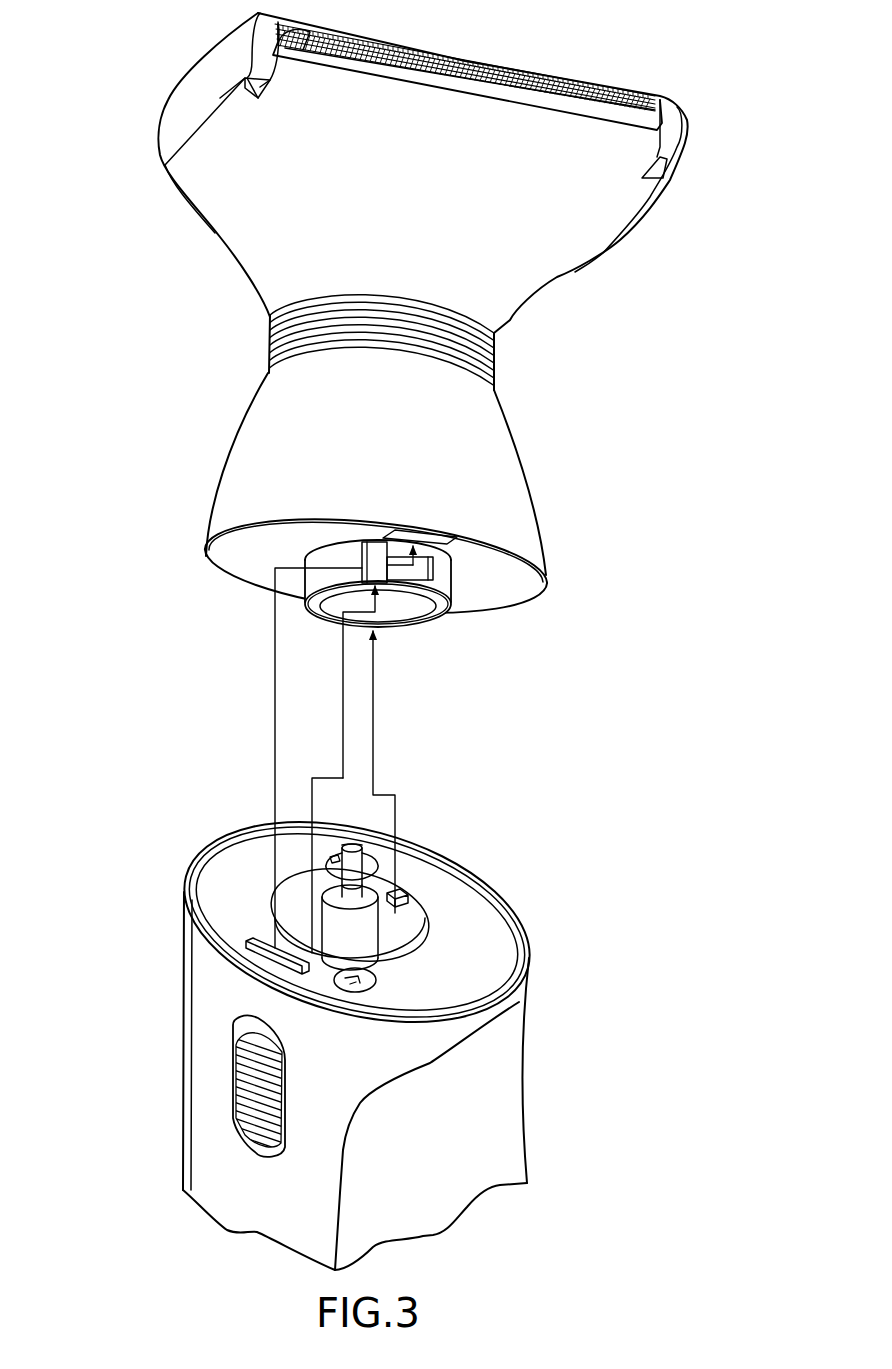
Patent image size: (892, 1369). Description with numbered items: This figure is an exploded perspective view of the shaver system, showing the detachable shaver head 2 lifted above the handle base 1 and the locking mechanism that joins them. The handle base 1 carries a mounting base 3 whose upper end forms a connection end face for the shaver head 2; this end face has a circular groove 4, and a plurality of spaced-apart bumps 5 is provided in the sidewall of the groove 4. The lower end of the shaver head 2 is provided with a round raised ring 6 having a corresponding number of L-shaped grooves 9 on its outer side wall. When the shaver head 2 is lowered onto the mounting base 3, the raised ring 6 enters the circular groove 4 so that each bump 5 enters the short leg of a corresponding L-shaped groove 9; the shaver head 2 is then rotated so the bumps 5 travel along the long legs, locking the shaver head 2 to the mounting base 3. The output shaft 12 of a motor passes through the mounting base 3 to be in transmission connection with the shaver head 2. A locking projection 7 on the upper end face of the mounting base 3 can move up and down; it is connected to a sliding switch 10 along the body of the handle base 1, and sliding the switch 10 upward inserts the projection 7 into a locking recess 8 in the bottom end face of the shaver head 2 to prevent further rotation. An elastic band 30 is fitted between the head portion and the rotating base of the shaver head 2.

The handle base 1 is at (320, 1020).
The shaver head 2 is at (409, 341).
The mounting base 3 is at (442, 1027).
The circular groove 4 is at (403, 935).
The bumps 5 is at (402, 897).
The raised ring 6 is at (443, 547).
The locking projection 7 is at (257, 933).
The locking recess 8 is at (449, 541).
The L-shaped grooves 9 is at (375, 553).
The sliding switch 10 is at (240, 1094).
The output shaft 12 is at (350, 865).
The elastic band 30 is at (268, 343).